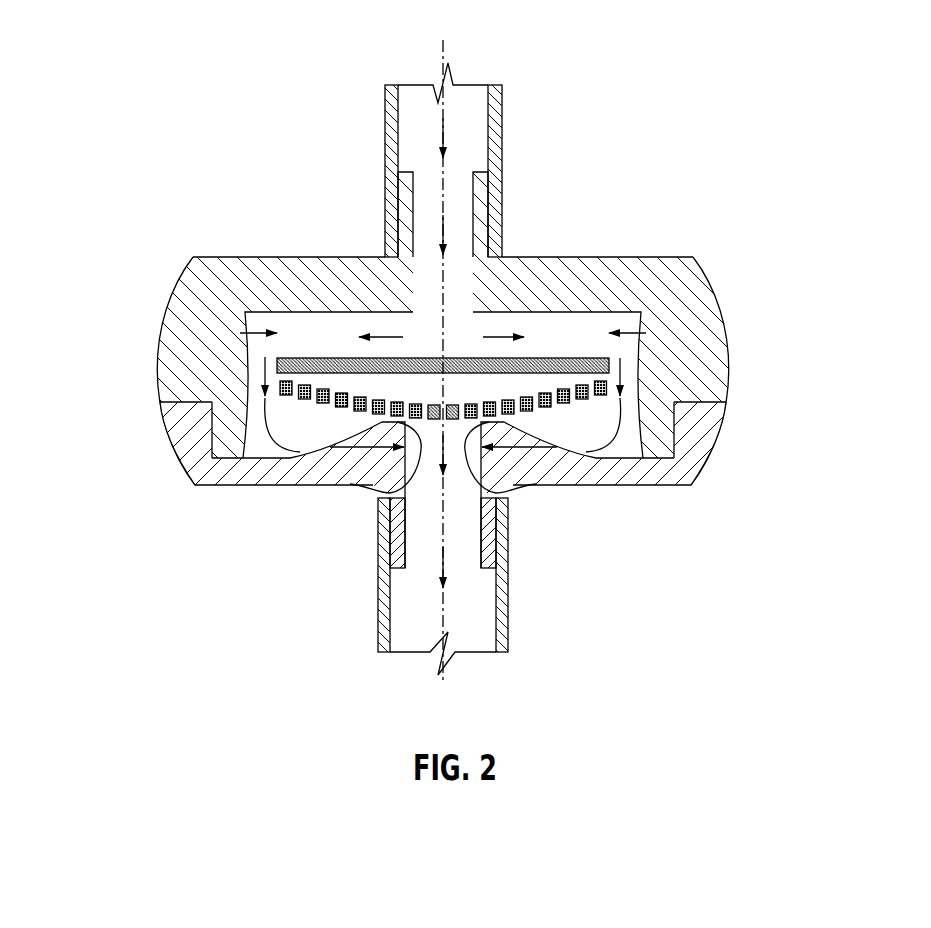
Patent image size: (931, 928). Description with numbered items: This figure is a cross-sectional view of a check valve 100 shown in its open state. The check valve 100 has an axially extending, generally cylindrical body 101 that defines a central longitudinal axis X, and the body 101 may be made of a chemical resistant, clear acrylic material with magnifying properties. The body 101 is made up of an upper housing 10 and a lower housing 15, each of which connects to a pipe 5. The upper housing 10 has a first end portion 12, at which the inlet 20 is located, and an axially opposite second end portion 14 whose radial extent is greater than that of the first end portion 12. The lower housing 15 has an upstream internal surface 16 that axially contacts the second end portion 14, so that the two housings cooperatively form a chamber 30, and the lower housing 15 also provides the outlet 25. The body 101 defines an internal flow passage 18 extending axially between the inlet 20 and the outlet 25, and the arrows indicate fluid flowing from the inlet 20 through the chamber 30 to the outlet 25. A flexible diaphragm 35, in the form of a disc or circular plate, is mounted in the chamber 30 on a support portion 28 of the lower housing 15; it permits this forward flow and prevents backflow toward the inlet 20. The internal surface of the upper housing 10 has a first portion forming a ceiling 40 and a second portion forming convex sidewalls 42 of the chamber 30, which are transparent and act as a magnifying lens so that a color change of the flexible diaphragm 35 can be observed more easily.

The check valve 100 is at (147, 99).
The pipe 5 is at (385, 147).
The inlet 20 is at (405, 202).
The body 101 is at (384, 227).
The first end portion 12 is at (478, 208).
The internal flow passage 18 is at (452, 282).
The upper housing 10 is at (193, 257).
The chamber 30 is at (275, 360).
The flexible diaphragm 35 is at (281, 386).
The ceiling 40 is at (280, 314).
The sidewalls 42 is at (262, 401).
The second end portion 14 is at (665, 447).
The lower housing 15 is at (192, 467).
The upstream internal surface 16 is at (269, 455).
The support portion 28 is at (385, 487).
The outlet 25 is at (397, 538).
The central longitudinal axis X is at (448, 42).